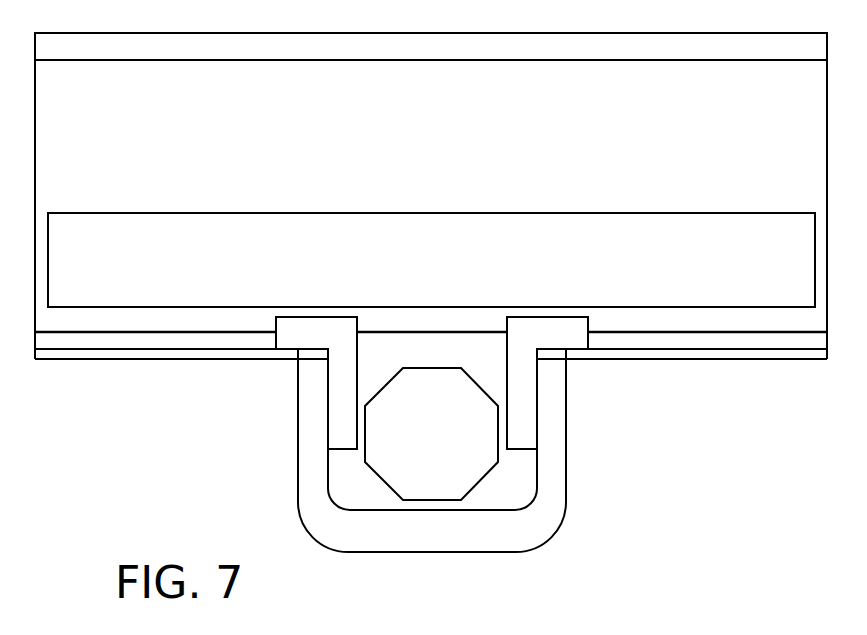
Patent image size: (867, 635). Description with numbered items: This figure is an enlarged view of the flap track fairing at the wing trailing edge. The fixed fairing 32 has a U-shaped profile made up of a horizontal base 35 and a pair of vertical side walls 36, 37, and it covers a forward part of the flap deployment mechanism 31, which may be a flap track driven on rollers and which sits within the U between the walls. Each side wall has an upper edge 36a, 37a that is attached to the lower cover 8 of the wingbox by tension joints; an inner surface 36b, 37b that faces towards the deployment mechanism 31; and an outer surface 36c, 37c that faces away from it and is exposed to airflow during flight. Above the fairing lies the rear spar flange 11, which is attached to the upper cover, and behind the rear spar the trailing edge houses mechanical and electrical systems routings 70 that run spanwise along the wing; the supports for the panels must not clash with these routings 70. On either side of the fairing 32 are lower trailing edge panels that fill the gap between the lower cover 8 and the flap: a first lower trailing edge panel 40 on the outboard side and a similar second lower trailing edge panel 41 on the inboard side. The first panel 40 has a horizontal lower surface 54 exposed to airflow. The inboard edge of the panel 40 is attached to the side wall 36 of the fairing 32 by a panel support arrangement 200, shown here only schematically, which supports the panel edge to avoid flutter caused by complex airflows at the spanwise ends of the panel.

The panel support arrangement 200 is at (268, 295).
The mechanical and electrical systems routings 70 is at (355, 230).
The flange 11 is at (619, 331).
The lower cover 8 is at (742, 343).
The lower surface 54 is at (120, 360).
The first lower trailing edge panel 40 is at (80, 355).
The second lower trailing edge panel 41 is at (703, 357).
The upper edge 36a is at (314, 358).
The upper edge 37a is at (552, 358).
The deployment mechanism 31 is at (435, 377).
The outer surface 36c is at (297, 420).
The outer surface 37c is at (567, 470).
The inner surface 36b is at (330, 472).
The inner surface 37b is at (533, 393).
The side wall 36 is at (313, 462).
The side wall 37 is at (550, 422).
The fixed fairing 32 is at (547, 517).
The horizontal base 35 is at (432, 528).